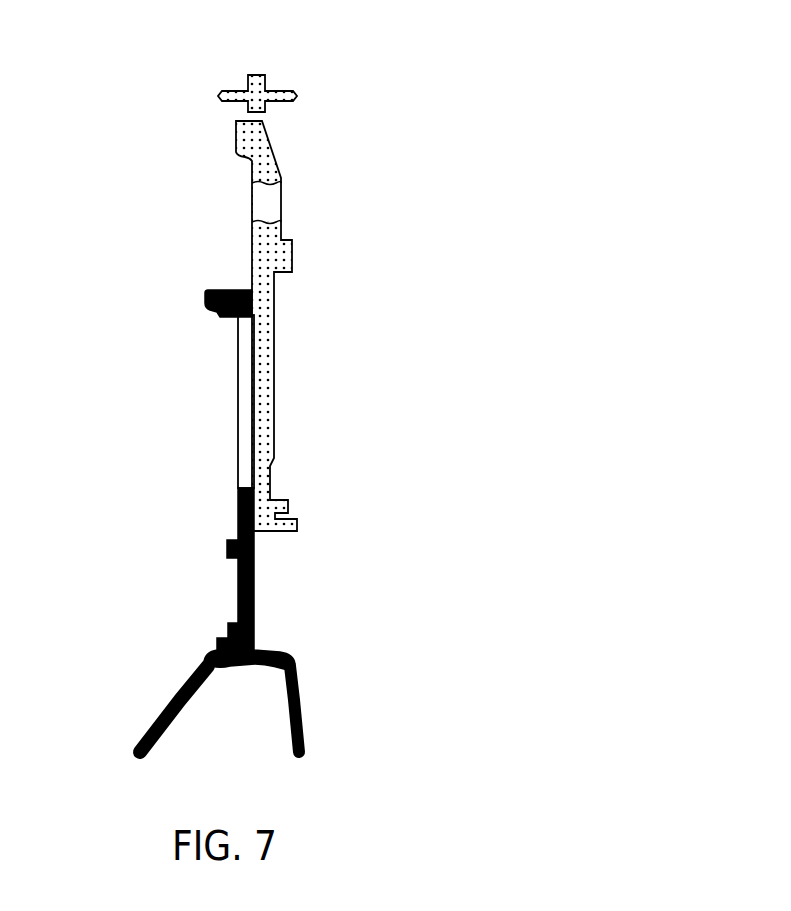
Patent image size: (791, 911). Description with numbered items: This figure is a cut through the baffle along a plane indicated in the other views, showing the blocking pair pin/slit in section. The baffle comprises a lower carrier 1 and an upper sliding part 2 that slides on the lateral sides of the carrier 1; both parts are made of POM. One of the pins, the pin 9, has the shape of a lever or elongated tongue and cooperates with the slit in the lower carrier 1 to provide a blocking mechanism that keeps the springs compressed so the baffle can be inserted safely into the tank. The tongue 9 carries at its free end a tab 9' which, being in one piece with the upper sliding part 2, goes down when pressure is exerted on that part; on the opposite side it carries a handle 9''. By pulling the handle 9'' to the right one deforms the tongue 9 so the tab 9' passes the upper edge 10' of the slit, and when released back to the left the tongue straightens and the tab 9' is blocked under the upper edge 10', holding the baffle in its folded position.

The lower carrier 1 is at (243, 598).
The upper sliding part 2 is at (297, 84).
The pin 9 is at (308, 326).
The tab 9' is at (172, 164).
The handle 9'' is at (354, 211).
The upper edge 10' is at (145, 326).